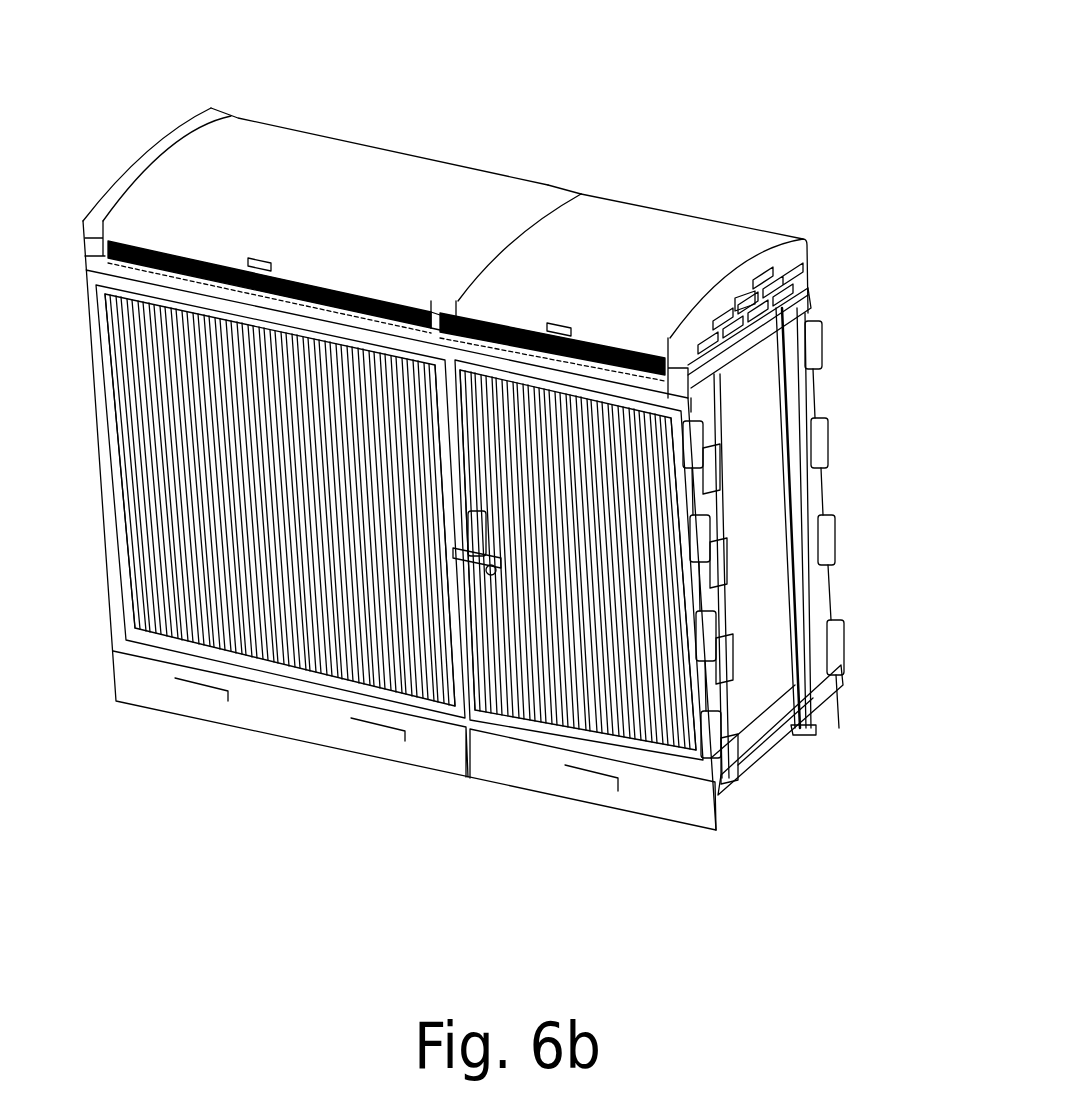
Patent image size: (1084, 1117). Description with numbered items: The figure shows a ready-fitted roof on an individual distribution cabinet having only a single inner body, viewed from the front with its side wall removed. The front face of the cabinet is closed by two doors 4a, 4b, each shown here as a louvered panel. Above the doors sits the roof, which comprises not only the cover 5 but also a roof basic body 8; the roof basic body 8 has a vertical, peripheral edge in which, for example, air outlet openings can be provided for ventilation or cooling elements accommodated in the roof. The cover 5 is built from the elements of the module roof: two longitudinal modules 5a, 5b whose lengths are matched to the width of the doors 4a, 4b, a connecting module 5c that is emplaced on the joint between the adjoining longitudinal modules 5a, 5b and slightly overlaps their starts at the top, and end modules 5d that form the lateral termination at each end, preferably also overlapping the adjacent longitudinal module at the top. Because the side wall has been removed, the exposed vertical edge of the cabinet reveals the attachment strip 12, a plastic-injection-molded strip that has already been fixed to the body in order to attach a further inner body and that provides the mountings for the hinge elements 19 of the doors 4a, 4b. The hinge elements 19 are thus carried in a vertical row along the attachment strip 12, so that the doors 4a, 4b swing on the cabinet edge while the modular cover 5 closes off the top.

The cover 5 is at (697, 145).
The longitudinal module 5a is at (328, 220).
The longitudinal module 5b is at (621, 287).
The connecting module 5c is at (522, 185).
The end module 5d is at (177, 128).
The roof basic body 8 is at (798, 270).
The door 4a is at (280, 501).
The door 4b is at (578, 560).
The attachment strip 12 is at (793, 457).
The hinge elements 19 is at (837, 623).